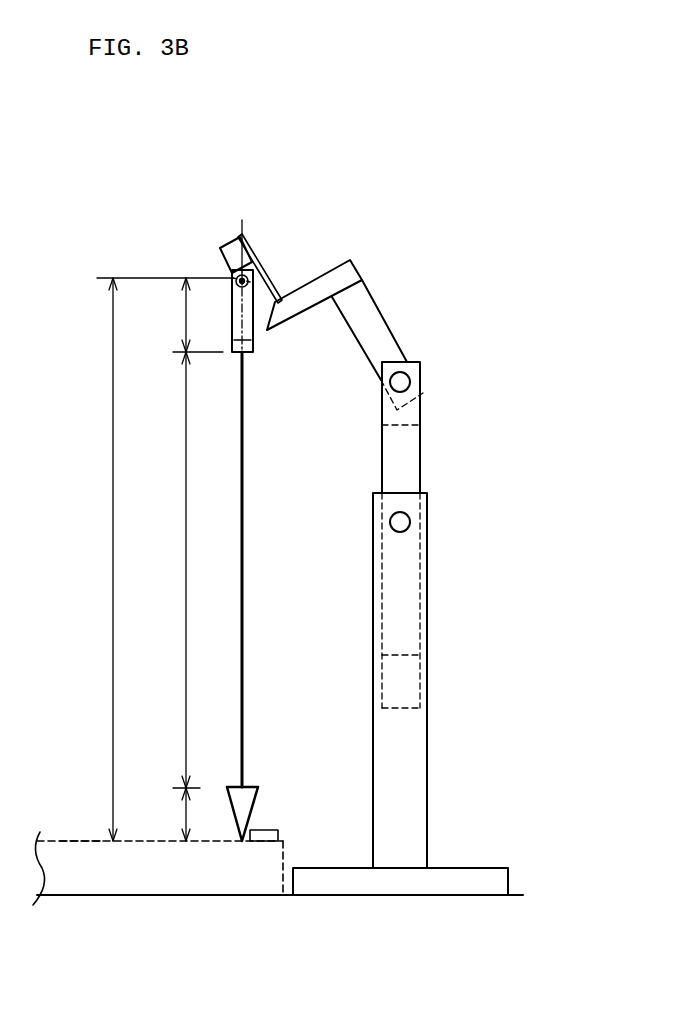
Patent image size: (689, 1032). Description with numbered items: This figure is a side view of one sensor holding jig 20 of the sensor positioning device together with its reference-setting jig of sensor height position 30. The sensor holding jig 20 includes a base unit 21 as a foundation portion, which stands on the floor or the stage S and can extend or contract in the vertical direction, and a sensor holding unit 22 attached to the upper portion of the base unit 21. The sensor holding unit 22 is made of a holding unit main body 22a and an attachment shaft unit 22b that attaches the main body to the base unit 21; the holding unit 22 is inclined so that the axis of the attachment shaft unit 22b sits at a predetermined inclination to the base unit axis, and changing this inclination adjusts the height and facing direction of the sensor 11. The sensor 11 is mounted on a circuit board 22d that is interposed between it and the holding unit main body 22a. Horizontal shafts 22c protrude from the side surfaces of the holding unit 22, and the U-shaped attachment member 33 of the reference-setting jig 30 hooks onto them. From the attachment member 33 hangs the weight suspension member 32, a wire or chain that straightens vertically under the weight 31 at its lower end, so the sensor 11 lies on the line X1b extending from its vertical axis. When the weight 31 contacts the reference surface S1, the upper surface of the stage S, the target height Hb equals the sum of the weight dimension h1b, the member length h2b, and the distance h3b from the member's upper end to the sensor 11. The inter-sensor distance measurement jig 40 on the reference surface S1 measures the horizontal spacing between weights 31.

The sensor 11 is at (215, 282).
The holding unit main body 22a is at (223, 242).
The line extending from the vertical axis of the weight suspension member X1b is at (243, 222).
The circuit board 22d is at (258, 265).
The horizontal shaft 22c is at (250, 280).
The attachment shaft unit 22b is at (425, 324).
The sensor holding unit 22 is at (395, 320).
The sensor holding jig 20 is at (457, 376).
The base unit 21 is at (421, 452).
The attachment member 33 is at (255, 352).
The weight suspension member 32 is at (243, 580).
The reference-setting jig of sensor height position 30 is at (437, 555).
The weight 31 is at (258, 795).
The inter-sensor distance measurement jig 40 is at (283, 833).
The stage S is at (58, 840).
The reference surface S1 is at (87, 840).
The distance Hb is at (149, 559).
The distance h3b is at (175, 315).
The length h2b is at (164, 570).
The vertical direction dimension h1b is at (157, 814).